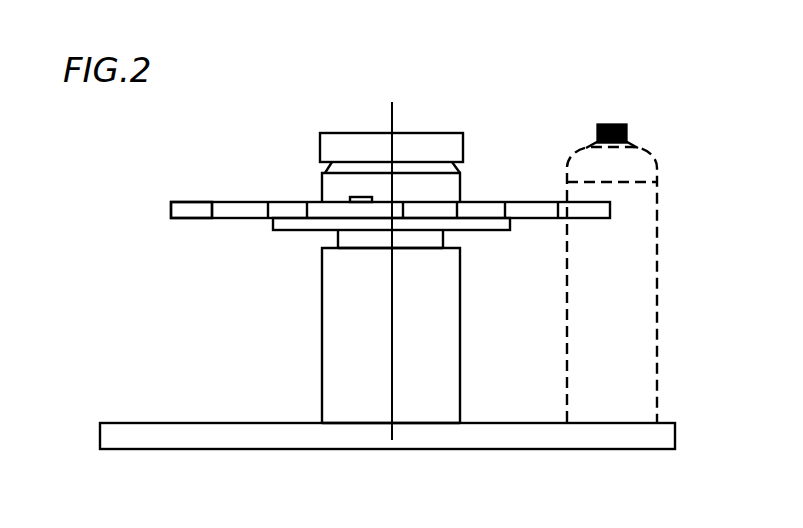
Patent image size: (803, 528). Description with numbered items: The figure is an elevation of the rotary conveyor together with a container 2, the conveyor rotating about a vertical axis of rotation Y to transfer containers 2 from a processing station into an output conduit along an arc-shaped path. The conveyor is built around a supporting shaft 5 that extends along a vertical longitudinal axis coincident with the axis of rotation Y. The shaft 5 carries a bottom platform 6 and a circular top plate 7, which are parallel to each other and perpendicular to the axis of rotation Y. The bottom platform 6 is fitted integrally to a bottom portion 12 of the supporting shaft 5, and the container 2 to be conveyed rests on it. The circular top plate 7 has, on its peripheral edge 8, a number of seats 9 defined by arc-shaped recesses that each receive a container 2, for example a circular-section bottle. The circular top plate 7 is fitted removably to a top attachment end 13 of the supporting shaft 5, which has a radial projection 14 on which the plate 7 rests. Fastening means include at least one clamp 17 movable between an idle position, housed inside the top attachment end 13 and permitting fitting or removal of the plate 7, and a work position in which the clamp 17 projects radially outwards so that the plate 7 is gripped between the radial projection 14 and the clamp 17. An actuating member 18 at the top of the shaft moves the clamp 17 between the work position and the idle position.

The container 2 is at (650, 165).
The supporting shaft 5 is at (318, 366).
The bottom platform 6 is at (113, 422).
The circular top plate 7 is at (177, 223).
The peripheral edge 8 is at (197, 210).
The seats 9 is at (252, 212).
The bottom portion 12 is at (318, 408).
The top attachment end 13 is at (308, 161).
The radial projection 14 is at (491, 239).
The clamp 17 is at (358, 204).
The actuating member 18 is at (357, 131).
The axis of rotation Y is at (395, 117).